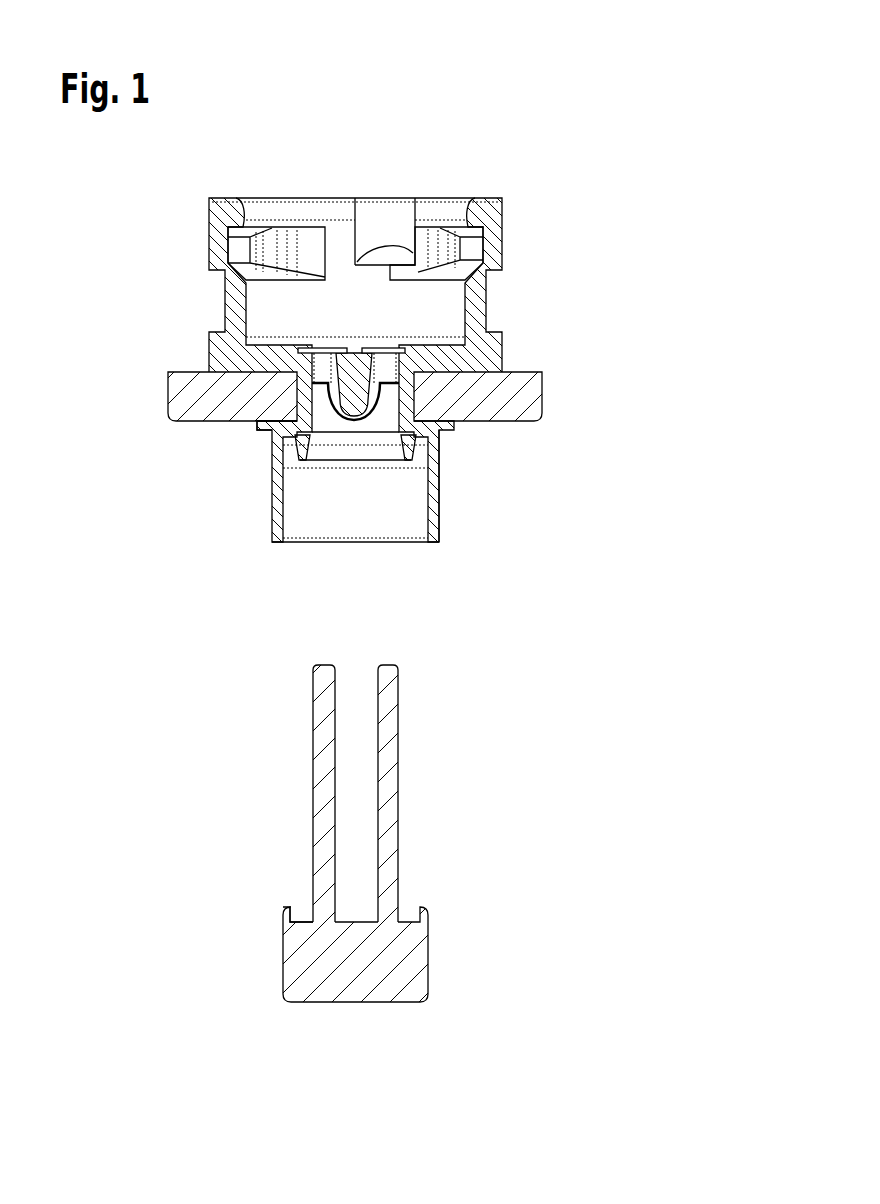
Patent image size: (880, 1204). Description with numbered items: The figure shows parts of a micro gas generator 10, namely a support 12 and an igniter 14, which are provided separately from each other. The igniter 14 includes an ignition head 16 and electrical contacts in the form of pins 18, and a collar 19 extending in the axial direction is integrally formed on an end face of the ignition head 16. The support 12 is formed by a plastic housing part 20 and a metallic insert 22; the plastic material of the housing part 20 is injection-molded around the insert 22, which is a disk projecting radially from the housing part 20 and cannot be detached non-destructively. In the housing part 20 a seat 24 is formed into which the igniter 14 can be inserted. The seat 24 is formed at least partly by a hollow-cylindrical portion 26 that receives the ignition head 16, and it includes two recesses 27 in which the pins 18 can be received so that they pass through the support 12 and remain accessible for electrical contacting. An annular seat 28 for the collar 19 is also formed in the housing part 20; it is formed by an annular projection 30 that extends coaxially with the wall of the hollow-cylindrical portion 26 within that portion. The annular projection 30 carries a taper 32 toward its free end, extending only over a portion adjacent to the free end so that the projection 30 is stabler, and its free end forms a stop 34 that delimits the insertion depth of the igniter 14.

The micro gas generator 10 is at (662, 192).
The support 12 is at (530, 242).
The igniter 14 is at (460, 752).
The ignition head 16 is at (313, 955).
The pins 18 is at (383, 760).
The collar 19 is at (287, 907).
The plastic housing part 20 is at (237, 313).
The metallic insert 22 is at (188, 403).
The seat 24 is at (327, 488).
The hollow-cylindrical portion 26 is at (277, 517).
The recesses 27 is at (317, 363).
The annular seat 28 is at (288, 448).
The annular projection 30 is at (440, 447).
The taper 32 is at (407, 452).
The stop 34 is at (440, 508).